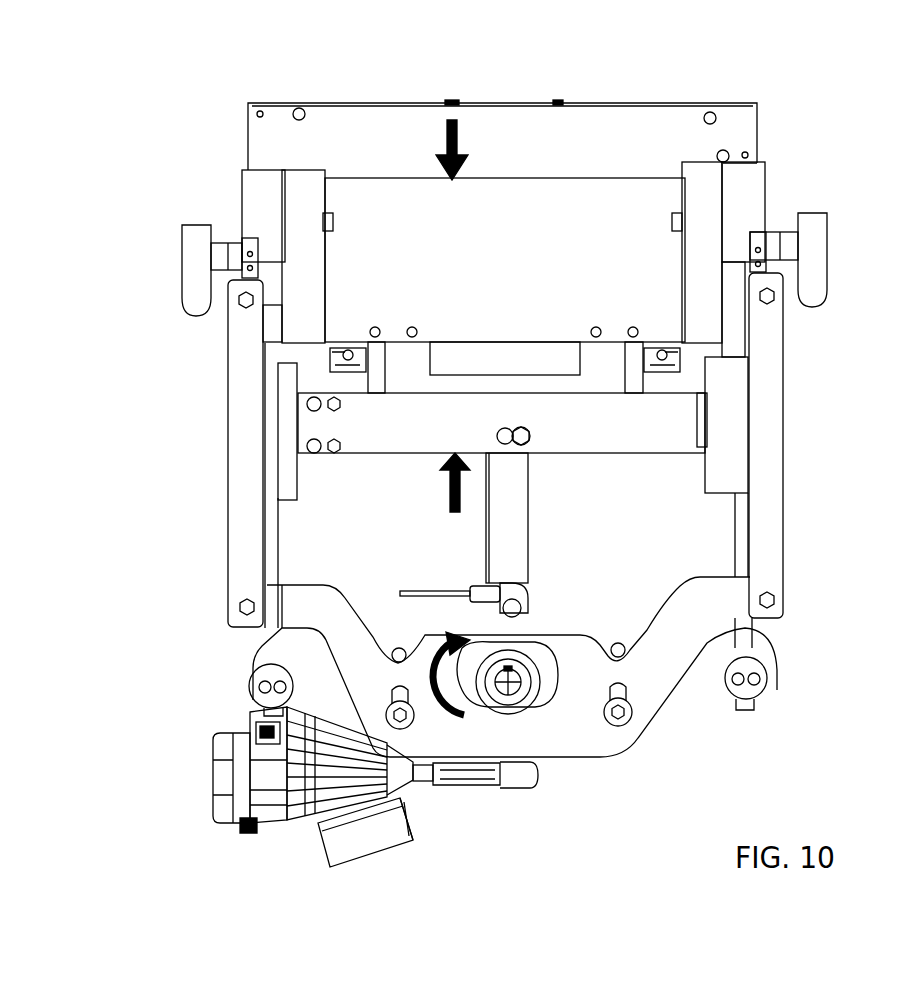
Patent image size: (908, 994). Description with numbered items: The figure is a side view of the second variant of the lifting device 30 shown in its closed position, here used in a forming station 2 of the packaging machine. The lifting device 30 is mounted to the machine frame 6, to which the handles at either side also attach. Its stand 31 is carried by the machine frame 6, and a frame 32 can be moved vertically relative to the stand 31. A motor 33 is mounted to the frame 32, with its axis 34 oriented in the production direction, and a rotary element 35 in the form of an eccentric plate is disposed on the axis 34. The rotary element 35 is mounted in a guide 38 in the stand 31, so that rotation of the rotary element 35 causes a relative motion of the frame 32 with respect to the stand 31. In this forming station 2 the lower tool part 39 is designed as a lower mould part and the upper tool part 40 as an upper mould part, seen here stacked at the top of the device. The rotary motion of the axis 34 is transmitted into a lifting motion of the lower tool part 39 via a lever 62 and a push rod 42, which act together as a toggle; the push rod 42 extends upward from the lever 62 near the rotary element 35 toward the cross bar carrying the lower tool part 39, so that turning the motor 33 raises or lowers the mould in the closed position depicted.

The forming station 2 is at (158, 485).
The machine frame 6 is at (182, 262).
The lifting device 30 is at (846, 102).
The stand 31 is at (615, 742).
The frame 32 is at (703, 695).
The motor 33 is at (330, 775).
The axis 34 is at (510, 692).
The rotary element 35 is at (540, 672).
The guide 38 is at (478, 700).
The lower tool part 39 is at (635, 200).
The upper tool part 40 is at (640, 125).
The push rod 42 is at (512, 515).
The lever 62 is at (527, 611).